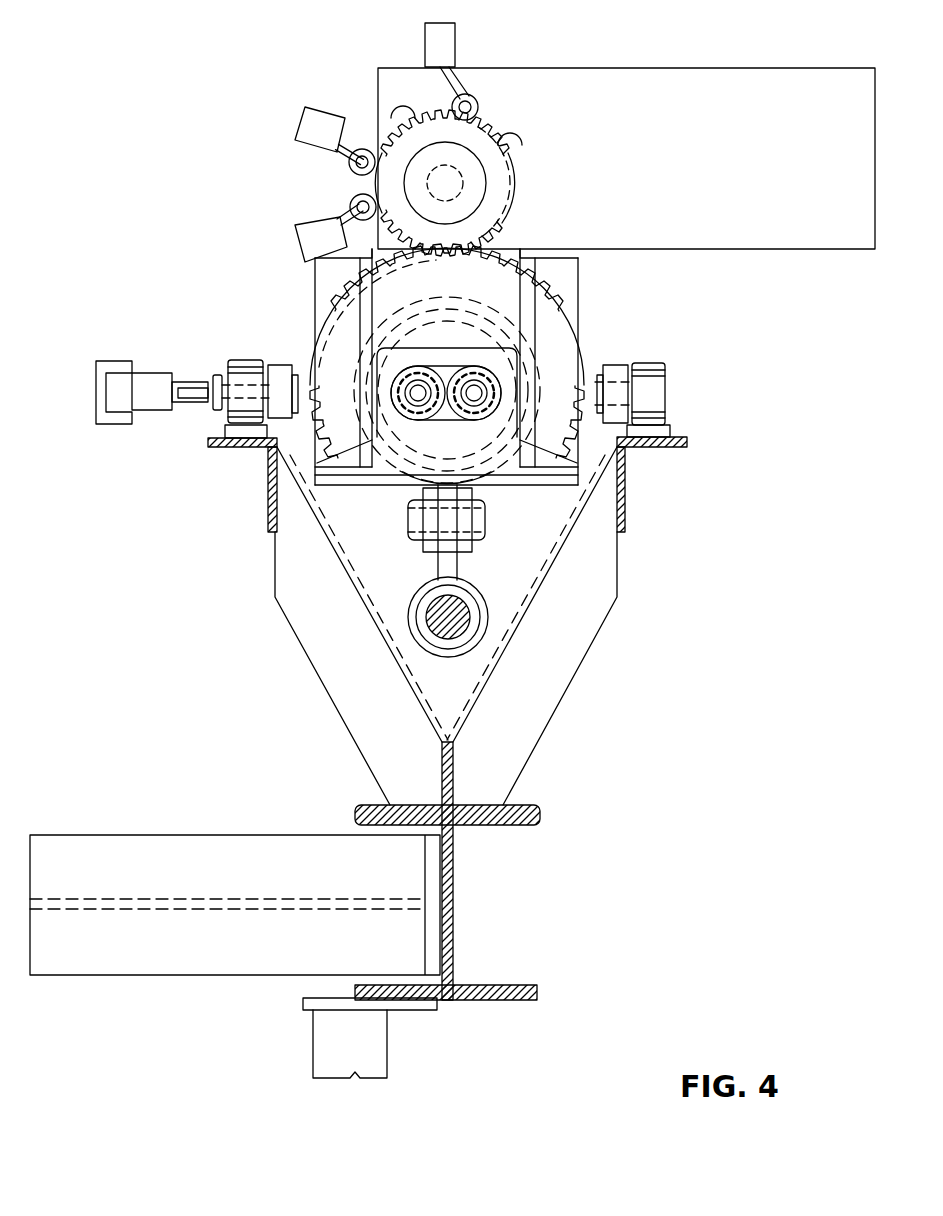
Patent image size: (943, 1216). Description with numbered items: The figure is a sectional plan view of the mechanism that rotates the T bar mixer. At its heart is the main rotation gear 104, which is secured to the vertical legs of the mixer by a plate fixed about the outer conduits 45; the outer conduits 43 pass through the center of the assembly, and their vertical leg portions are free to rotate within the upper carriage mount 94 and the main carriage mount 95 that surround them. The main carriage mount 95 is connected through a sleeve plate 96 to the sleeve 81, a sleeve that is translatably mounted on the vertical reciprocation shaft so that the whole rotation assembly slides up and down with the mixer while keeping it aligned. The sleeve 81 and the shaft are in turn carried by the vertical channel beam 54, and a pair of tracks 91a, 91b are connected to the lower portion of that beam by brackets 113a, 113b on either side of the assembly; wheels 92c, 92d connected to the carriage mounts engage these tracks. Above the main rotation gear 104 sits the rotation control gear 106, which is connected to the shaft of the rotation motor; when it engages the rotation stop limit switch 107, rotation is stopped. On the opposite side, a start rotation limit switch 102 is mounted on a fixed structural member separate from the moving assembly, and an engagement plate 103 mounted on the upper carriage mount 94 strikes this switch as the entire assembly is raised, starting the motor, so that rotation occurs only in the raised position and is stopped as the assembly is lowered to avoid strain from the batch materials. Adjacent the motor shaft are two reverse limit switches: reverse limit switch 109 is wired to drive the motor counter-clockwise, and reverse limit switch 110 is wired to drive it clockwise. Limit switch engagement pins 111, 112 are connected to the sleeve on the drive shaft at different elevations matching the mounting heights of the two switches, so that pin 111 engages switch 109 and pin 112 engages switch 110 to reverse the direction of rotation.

The outer conduits 43 is at (478, 425).
The outer conduits 45 is at (470, 414).
The vertical channel beam 54 is at (545, 818).
The sleeve 81 is at (478, 594).
The track 91a is at (652, 448).
The track 91b is at (245, 450).
The wheel 92c is at (650, 364).
The wheel 92d is at (245, 360).
The upper carriage mount 94 is at (598, 424).
The main carriage mount 95 is at (503, 488).
The sleeve plate 96 is at (437, 569).
The start rotation limit switch 102 is at (157, 410).
The engagement plate 103 is at (216, 376).
The main rotation gear 104 is at (566, 304).
The rotation control gear 106 is at (510, 180).
The rotation stop limit switch 107 is at (458, 32).
The reverse limit switch 109 is at (305, 128).
The reverse limit switch 110 is at (300, 235).
The limit switch engagement pin 111 is at (520, 138).
The limit switch engagement pin 112 is at (393, 113).
The bracket 113a is at (570, 686).
The bracket 113b is at (314, 667).